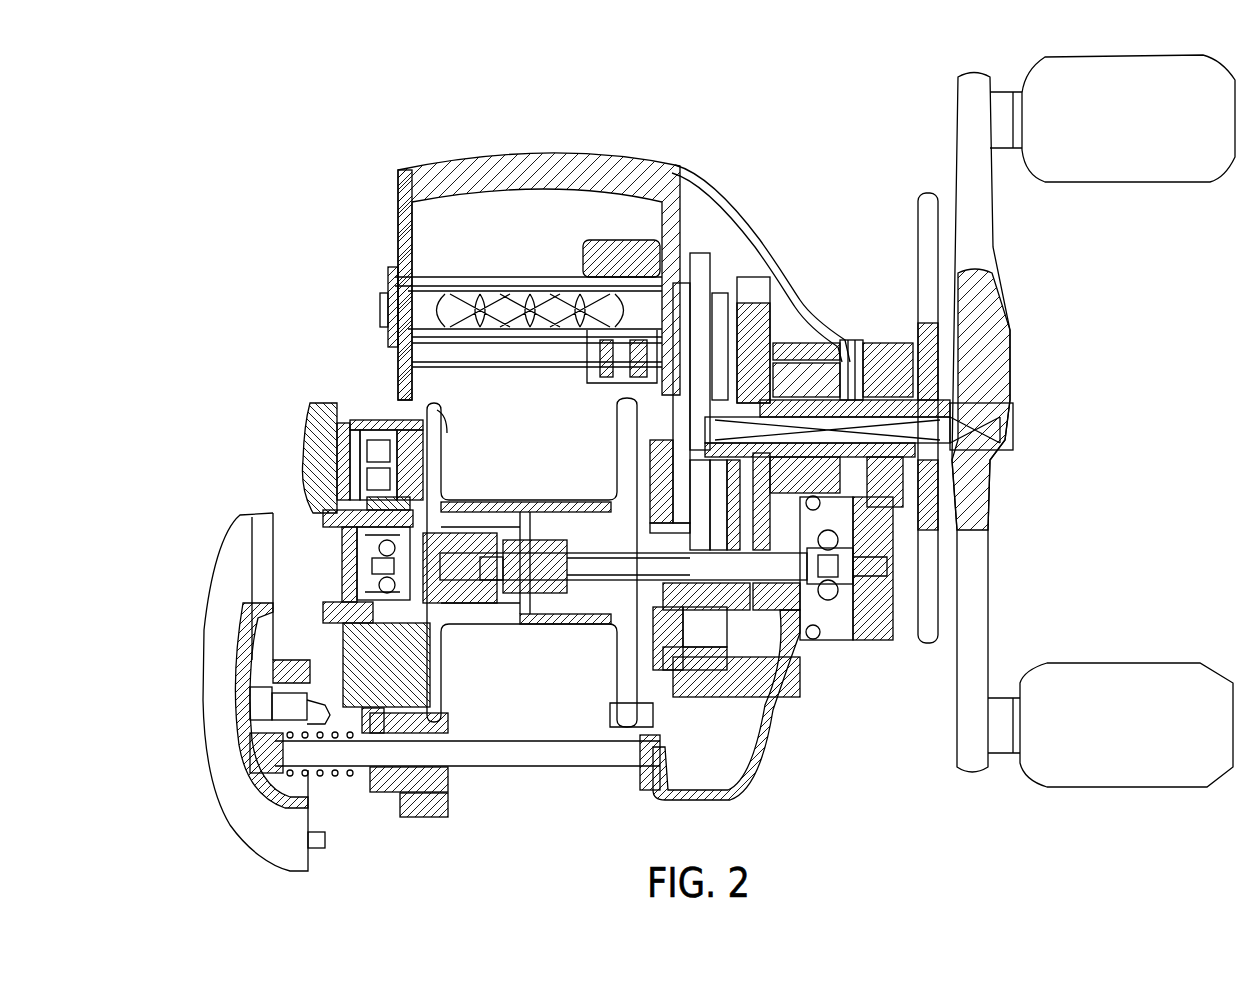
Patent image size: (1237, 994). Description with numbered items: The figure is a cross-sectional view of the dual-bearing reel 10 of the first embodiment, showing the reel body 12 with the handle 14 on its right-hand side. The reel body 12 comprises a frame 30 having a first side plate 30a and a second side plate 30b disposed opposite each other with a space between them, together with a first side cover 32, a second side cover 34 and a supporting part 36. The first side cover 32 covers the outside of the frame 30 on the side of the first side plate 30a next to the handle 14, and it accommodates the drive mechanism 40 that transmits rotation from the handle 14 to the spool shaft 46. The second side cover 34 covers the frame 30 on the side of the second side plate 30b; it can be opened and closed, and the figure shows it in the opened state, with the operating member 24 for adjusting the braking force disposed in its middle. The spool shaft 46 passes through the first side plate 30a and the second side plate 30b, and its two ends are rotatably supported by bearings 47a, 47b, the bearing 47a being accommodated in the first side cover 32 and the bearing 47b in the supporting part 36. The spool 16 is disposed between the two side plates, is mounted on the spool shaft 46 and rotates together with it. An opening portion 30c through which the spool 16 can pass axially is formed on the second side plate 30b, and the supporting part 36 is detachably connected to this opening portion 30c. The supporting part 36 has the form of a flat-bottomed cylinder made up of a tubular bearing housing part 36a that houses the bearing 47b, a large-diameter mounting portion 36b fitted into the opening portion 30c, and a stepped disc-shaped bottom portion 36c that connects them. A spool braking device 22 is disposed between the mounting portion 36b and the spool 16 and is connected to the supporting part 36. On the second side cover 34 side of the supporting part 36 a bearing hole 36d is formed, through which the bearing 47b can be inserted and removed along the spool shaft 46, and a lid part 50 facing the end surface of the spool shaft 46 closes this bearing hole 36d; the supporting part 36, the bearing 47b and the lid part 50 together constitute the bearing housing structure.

The dual-bearing reel 10 is at (878, 163).
The reel body 12 is at (812, 232).
The handle 14 is at (1000, 258).
The spool 16 is at (565, 498).
The spool braking device 22 is at (488, 638).
The operating member 24 is at (315, 420).
The frame 30 is at (628, 150).
The first side plate 30a is at (690, 192).
The second side plate 30b is at (400, 218).
The opening portion 30c is at (380, 718).
The first side cover 32 is at (785, 725).
The second side cover 34 is at (207, 757).
The supporting part 36 is at (330, 485).
The bearing housing part 36a is at (440, 655).
The mounting portion 36b is at (368, 732).
The bottom portion 36c is at (338, 632).
The bearing hole 36d is at (338, 577).
The drive mechanism 40 is at (750, 265).
The spool shaft 46 is at (592, 588).
The bearing 47a is at (845, 642).
The bearing 47b is at (335, 545).
The lid part 50 is at (340, 515).